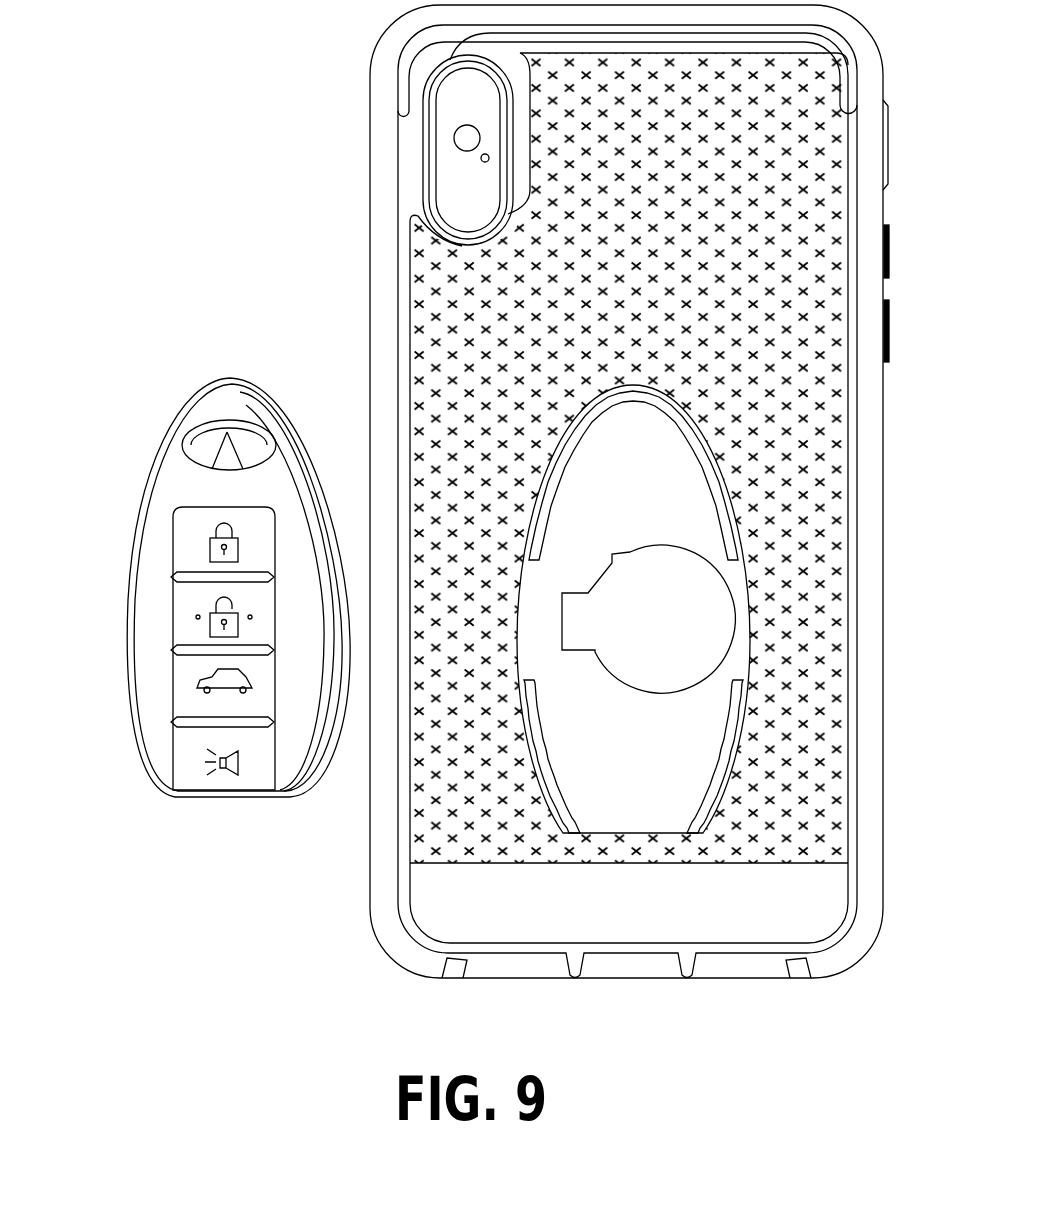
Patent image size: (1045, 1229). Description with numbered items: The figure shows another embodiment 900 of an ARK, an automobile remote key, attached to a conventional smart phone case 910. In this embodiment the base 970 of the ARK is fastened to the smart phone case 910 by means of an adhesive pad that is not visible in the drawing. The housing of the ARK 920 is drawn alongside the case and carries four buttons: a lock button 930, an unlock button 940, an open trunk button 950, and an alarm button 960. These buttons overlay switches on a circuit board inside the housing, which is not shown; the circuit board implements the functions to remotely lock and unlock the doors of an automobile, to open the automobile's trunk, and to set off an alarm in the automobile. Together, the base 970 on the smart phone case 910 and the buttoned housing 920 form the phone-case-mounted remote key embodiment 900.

The embodiment of an ARK attached to a smart phone case 900 is at (126, 70).
The smart phone case 910 is at (396, 90).
The housing of the ARK 920 is at (128, 597).
The lock button 930 is at (188, 539).
The unlock button 940 is at (182, 597).
The open trunk button 950 is at (182, 677).
The alarm button 960 is at (185, 757).
The base of the ARK 970 is at (740, 627).